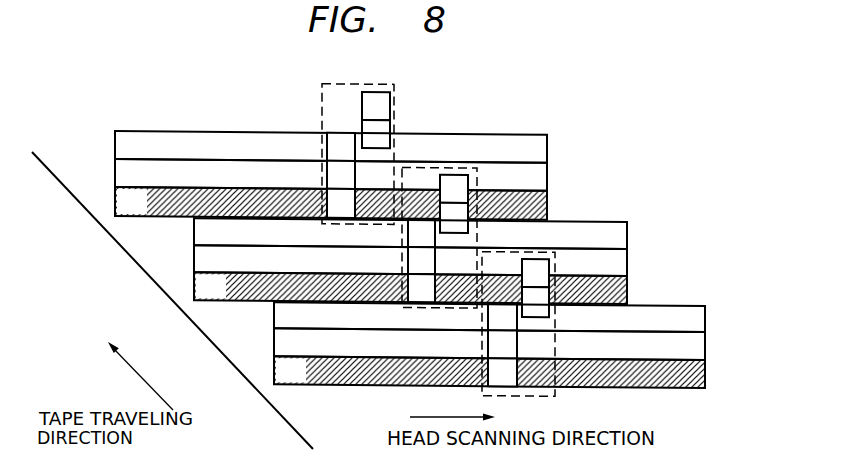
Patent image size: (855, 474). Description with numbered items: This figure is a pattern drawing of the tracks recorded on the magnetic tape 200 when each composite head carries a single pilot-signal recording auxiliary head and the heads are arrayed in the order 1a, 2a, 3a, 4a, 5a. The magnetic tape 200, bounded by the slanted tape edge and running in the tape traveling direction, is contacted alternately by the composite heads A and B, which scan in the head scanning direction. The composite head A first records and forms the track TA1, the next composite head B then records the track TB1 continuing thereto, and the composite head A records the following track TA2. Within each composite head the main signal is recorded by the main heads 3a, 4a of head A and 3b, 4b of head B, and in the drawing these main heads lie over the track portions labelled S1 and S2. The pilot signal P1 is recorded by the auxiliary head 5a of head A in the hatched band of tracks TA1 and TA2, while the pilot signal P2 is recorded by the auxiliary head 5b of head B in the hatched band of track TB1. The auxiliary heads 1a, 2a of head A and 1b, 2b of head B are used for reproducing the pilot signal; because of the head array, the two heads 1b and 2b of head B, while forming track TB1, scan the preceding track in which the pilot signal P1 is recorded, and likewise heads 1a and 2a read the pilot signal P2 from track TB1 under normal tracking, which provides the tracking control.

The magnetic tape 200 is at (291, 427).
The composite head A is at (394, 84).
The composite head B is at (477, 168).
The track TA1 is at (292, 189).
The track TB1 is at (369, 269).
The track TA2 is at (274, 379).
The auxiliary head 1a is at (455, 189).
The auxiliary head 2a is at (455, 218).
The main head 3a is at (422, 232).
The main head 4a is at (422, 260).
The auxiliary head 5a is at (353, 188).
The auxiliary head 1b is at (454, 189).
The auxiliary head 2b is at (454, 218).
The main head 3b is at (421, 233).
The main head 4b is at (421, 260).
The auxiliary head 5b is at (433, 272).
The first sound track S1 is at (331, 147).
The second sound track S2 is at (331, 175).
The pilot signal P1 is at (331, 203).
The pilot signal P2 is at (410, 288).